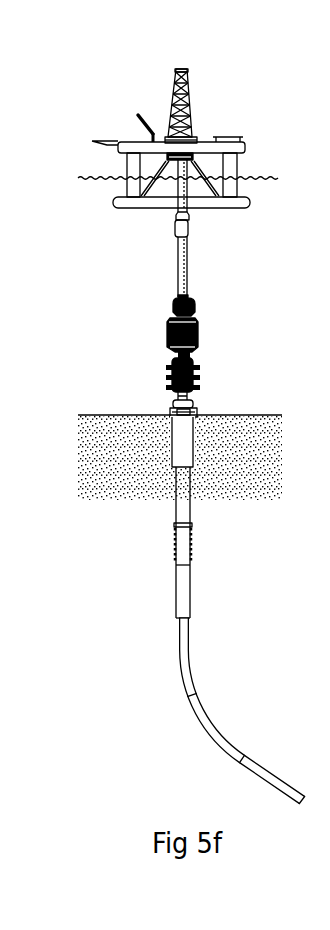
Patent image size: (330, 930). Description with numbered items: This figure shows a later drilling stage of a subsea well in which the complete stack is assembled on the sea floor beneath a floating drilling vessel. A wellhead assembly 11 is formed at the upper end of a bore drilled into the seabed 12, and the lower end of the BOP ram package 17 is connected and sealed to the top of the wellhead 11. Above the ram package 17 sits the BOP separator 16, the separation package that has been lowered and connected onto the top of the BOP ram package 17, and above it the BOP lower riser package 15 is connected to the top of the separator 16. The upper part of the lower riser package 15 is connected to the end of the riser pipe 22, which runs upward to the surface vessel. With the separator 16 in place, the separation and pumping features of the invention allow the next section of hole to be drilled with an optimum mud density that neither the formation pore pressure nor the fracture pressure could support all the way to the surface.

The riser pipe 22 is at (128, 253).
The BOP lower riser package 15 is at (193, 303).
The BOP separator 16 is at (167, 333).
The BOP ram package 17 is at (168, 375).
The wellhead assembly 11 is at (170, 405).
The seabed 12 is at (218, 415).